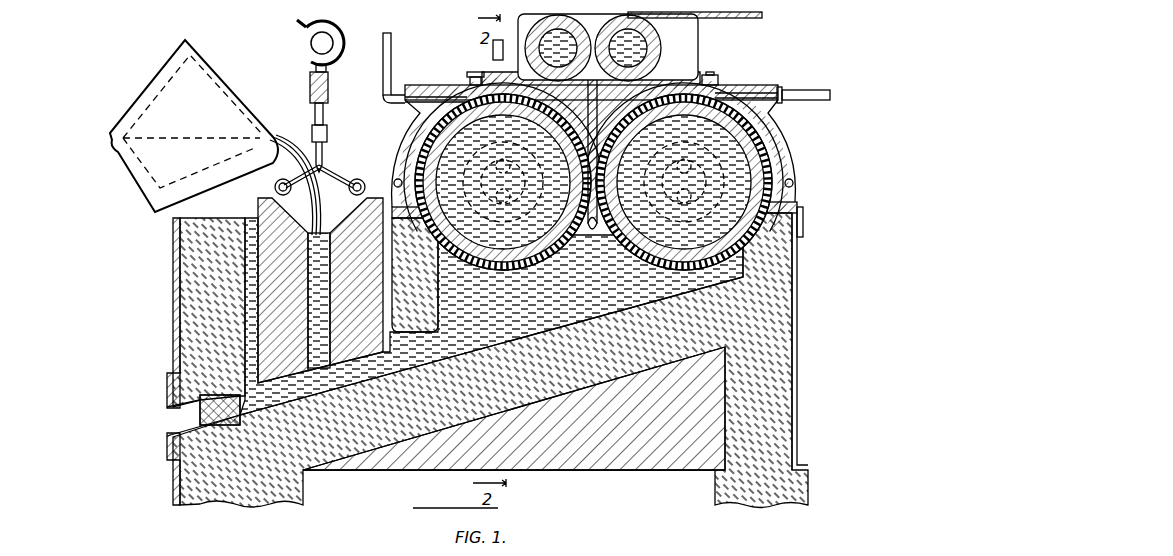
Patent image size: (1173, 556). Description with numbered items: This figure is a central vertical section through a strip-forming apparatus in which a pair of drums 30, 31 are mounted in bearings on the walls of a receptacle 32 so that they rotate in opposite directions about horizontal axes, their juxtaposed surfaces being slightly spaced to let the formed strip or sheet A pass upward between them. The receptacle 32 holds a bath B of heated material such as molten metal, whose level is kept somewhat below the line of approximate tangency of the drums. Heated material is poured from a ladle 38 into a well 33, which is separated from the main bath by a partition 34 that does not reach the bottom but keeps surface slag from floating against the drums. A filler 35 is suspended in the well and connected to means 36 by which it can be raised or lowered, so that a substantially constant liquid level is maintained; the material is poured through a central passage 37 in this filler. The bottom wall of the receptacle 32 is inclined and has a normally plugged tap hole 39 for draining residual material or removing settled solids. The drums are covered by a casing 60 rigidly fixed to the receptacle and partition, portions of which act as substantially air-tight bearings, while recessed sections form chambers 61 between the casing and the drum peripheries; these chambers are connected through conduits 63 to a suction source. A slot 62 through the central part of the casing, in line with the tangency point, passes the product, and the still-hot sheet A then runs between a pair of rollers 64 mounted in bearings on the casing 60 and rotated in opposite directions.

The drum 30 is at (486, 82).
The drum 31 is at (718, 100).
The receptacle 32 is at (588, 374).
The well 33 is at (247, 216).
The partition 34 is at (446, 289).
The filler 35 is at (378, 196).
The raising and lowering means 36 is at (331, 58).
The central passage 37 is at (319, 300).
The ladle 38 is at (153, 90).
The tap hole 39 is at (183, 414).
The casing 60 is at (461, 93).
The chamber 61 is at (404, 134).
The slot 62 is at (547, 136).
The conduit 63 is at (393, 42).
The roller 64 is at (686, 38).
The strip or sheet A is at (762, 17).
The bath B is at (491, 316).